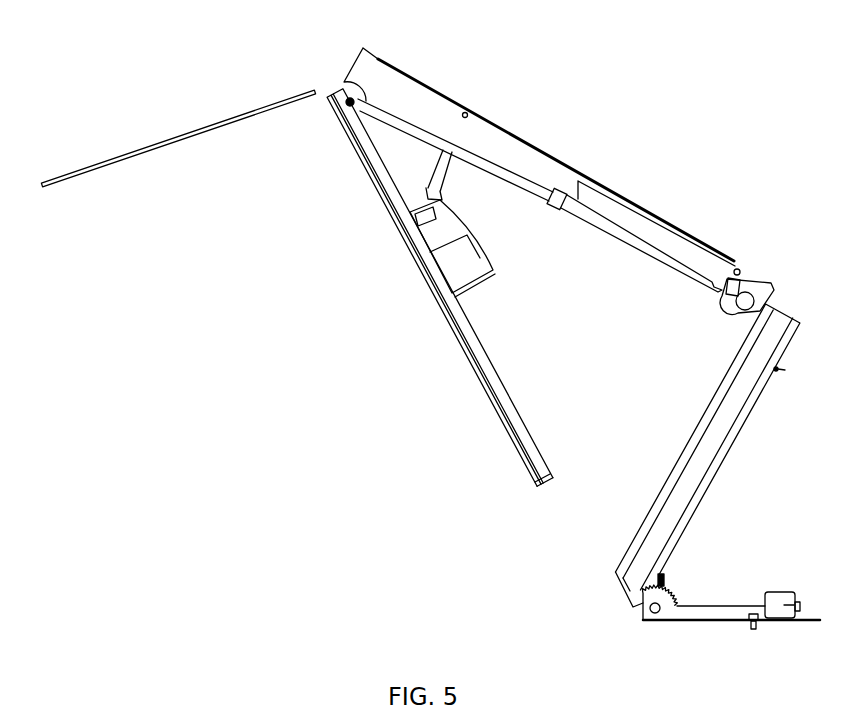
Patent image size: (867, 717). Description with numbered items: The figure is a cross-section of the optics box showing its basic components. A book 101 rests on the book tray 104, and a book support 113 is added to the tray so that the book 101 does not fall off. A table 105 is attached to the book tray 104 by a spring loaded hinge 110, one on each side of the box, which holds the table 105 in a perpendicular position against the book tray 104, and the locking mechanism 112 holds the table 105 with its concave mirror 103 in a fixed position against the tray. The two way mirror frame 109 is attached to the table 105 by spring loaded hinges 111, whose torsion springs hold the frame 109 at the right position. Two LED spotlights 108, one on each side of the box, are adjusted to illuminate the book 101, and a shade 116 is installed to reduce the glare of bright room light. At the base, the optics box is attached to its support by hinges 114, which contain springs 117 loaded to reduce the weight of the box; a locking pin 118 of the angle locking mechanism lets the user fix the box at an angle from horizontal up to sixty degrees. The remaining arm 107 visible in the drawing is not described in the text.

The book 101 is at (618, 560).
The concave mirror 103 is at (450, 137).
The book tray 104 is at (718, 455).
The table 105 is at (493, 138).
The support arm 107 is at (335, 100).
The LED spotlight 108 is at (443, 237).
The two way mirror frame 109 is at (543, 473).
The spring loaded hinge 110 is at (742, 303).
The spring loaded hinge 111 is at (340, 92).
The locking mechanism 112 is at (731, 277).
The book support 113 is at (632, 582).
The hinge 114 is at (643, 622).
The shade 116 is at (107, 162).
The spring 117 is at (428, 190).
The locking pin 118 is at (662, 577).